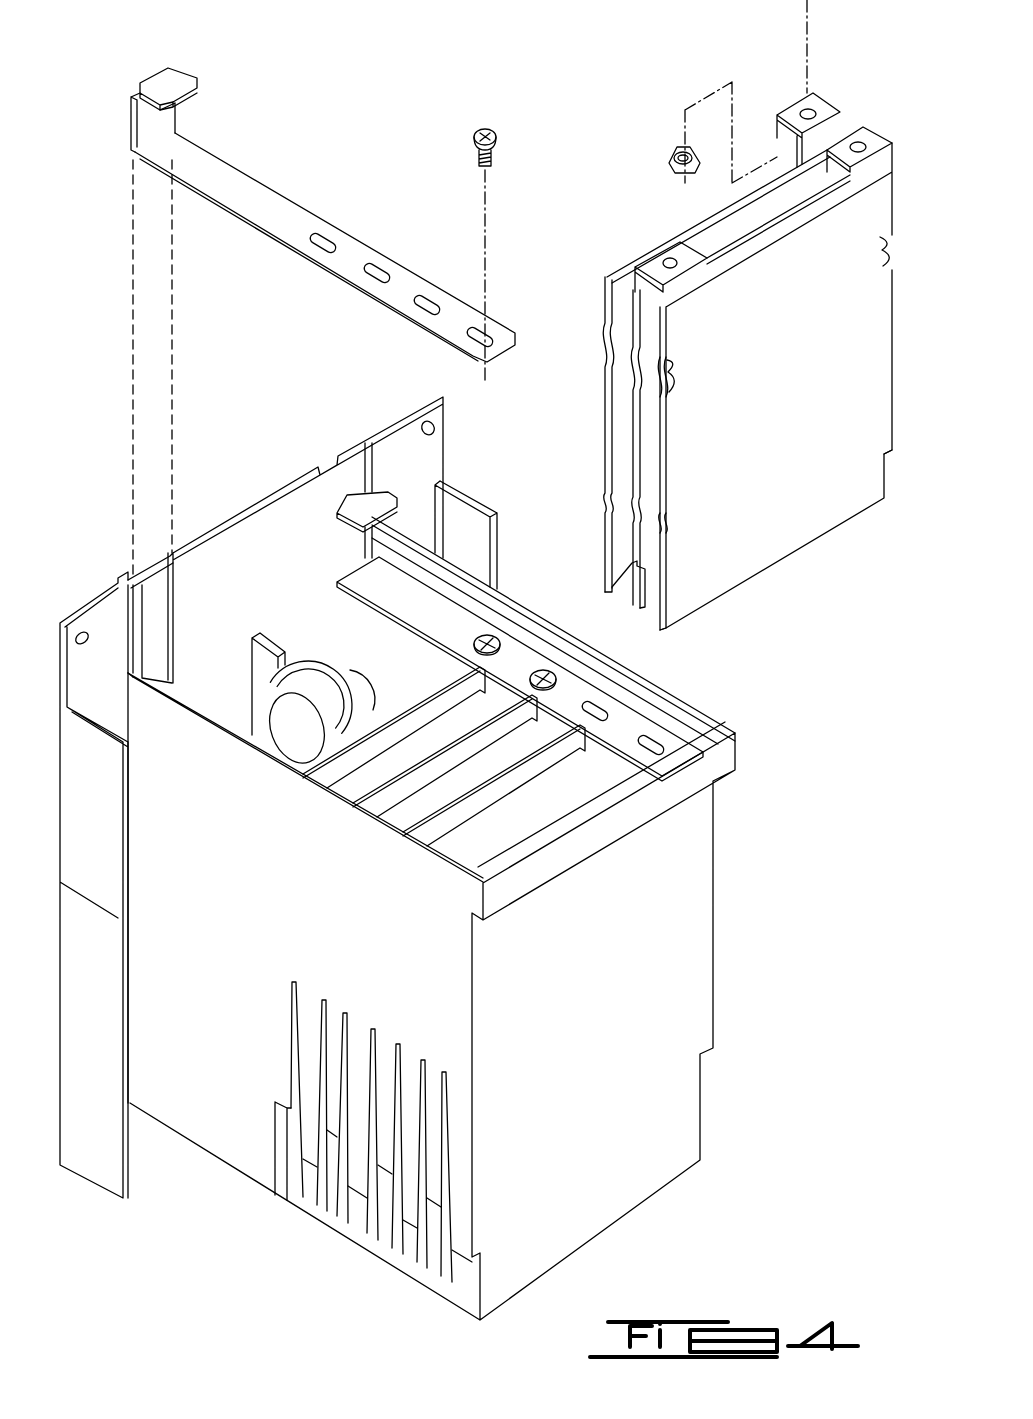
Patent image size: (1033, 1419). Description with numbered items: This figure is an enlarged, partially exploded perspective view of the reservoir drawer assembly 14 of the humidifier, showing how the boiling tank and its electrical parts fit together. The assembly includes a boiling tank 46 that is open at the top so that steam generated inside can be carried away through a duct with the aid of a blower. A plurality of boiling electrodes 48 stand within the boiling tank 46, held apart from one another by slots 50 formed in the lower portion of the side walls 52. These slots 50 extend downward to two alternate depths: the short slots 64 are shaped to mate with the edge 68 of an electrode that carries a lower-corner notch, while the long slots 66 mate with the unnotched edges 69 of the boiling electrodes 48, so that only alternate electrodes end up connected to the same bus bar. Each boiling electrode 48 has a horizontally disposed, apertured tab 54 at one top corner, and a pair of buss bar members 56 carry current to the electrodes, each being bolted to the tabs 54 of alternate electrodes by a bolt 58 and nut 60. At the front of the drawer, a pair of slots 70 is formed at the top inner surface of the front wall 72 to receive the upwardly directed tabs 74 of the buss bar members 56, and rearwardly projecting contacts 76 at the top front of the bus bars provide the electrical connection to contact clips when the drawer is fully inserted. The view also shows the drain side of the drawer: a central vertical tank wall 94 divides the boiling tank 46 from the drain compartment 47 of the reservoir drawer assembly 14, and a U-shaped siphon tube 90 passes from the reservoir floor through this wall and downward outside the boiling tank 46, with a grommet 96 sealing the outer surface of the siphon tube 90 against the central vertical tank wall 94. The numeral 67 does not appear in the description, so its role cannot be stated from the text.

The reservoir drawer assembly 14 is at (700, 970).
The boiling tank 46 is at (425, 656).
The drain compartment 47 is at (272, 750).
The boiling electrodes 48 is at (745, 550).
The slots 50 is at (308, 1172).
The side walls 52 is at (228, 1128).
The tab 54 is at (861, 128).
The buss bar members 56 is at (253, 198).
The bolt 58 is at (485, 124).
The nut 60 is at (666, 164).
The short slots 64 is at (395, 1152).
The long slots 66 is at (415, 1215).
The notch 67 is at (890, 478).
The edge 68 is at (635, 557).
The unnotched edges 69 is at (663, 628).
The slots 70 is at (163, 597).
The front wall 72 is at (245, 520).
The upwardly directed tabs 74 is at (147, 113).
The rearwardly projecting contacts 76 is at (178, 82).
The U-shaped siphon tube 90 is at (287, 723).
The central vertical tank wall 94 is at (270, 633).
The grommet 96 is at (315, 660).